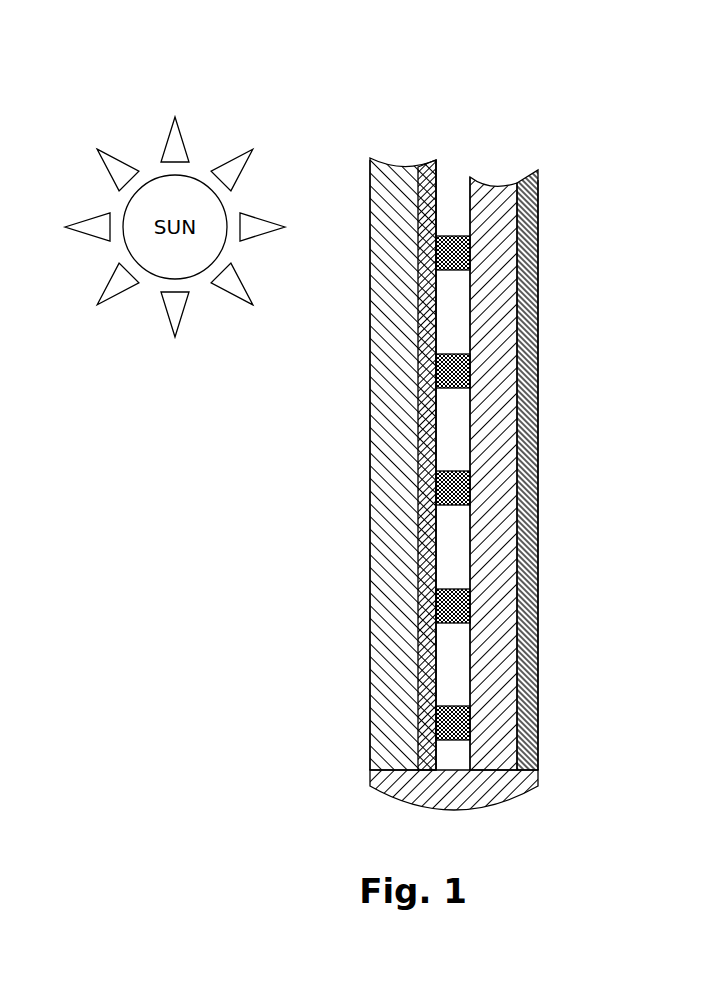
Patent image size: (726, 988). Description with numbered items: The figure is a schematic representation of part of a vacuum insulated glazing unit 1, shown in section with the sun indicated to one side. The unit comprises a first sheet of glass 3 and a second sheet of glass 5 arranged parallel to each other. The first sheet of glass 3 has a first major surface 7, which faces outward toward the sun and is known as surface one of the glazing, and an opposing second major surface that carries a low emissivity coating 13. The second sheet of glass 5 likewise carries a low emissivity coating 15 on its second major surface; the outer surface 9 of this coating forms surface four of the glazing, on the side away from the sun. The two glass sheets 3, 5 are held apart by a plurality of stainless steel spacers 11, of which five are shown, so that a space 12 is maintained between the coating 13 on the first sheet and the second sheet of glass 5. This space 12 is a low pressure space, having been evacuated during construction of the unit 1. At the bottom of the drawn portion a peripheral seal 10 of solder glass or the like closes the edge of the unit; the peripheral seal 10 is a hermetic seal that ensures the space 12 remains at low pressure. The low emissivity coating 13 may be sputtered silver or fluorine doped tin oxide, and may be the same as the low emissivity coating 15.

The vacuum insulated glazing unit 1 is at (316, 120).
The first sheet of glass 3 is at (382, 570).
The second sheet of glass 5 is at (493, 185).
The first major surface 7 is at (358, 672).
The outer surface of the low emissivity coating 9 is at (552, 742).
The peripheral seal 10 is at (403, 795).
The stainless steel spacers 11 is at (455, 258).
The space 12 is at (452, 166).
The low emissivity coating 13 is at (427, 167).
The low emissivity coating 15 is at (530, 200).